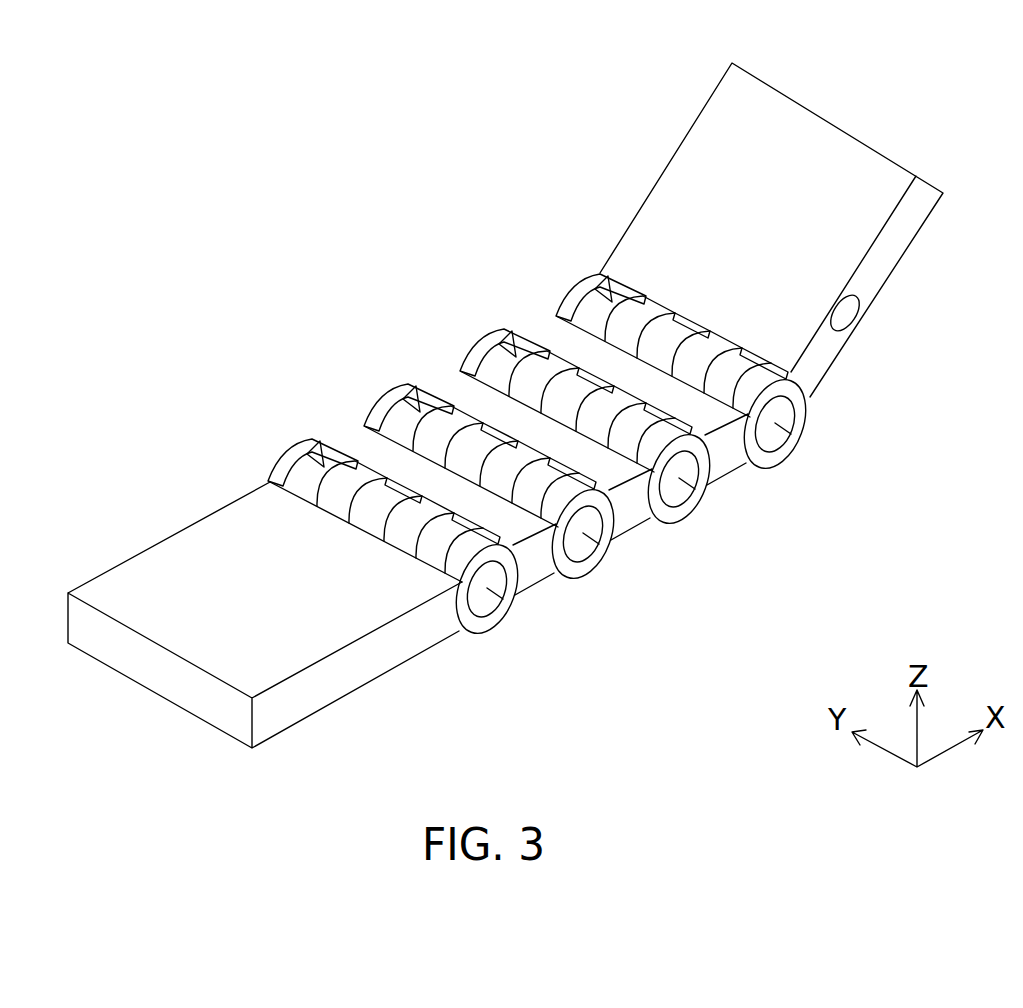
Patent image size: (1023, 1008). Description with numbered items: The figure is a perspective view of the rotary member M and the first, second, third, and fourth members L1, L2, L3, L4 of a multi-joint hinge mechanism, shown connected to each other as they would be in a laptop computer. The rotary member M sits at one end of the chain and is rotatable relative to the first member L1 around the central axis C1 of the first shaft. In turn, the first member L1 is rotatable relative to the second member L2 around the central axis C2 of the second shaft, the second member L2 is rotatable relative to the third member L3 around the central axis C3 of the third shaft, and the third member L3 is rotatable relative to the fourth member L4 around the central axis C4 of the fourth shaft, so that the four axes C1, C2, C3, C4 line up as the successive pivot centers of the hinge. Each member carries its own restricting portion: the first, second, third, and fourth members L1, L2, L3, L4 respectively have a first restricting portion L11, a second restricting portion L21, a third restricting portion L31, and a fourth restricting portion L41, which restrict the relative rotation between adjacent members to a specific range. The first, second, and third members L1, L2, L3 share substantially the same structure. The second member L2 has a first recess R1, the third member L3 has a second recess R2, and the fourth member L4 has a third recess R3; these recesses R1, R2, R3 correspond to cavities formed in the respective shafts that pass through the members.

The rotary member M is at (688, 174).
The first member L1 is at (630, 337).
The first restricting portion L11 is at (577, 287).
The second member L2 is at (530, 394).
The second restricting portion L21 is at (476, 346).
The third member L3 is at (434, 452).
The third restricting portion L31 is at (377, 404).
The fourth member L4 is at (284, 591).
The fourth restricting portion L41 is at (281, 460).
The central axis of the first shaft C1 is at (797, 435).
The central axis of the second shaft C2 is at (707, 492).
The central axis of the third shaft C3 is at (613, 548).
The central axis of the fourth shaft C4 is at (517, 604).
The first recess R1 is at (745, 465).
The second recess R2 is at (650, 519).
The third recess R3 is at (553, 576).